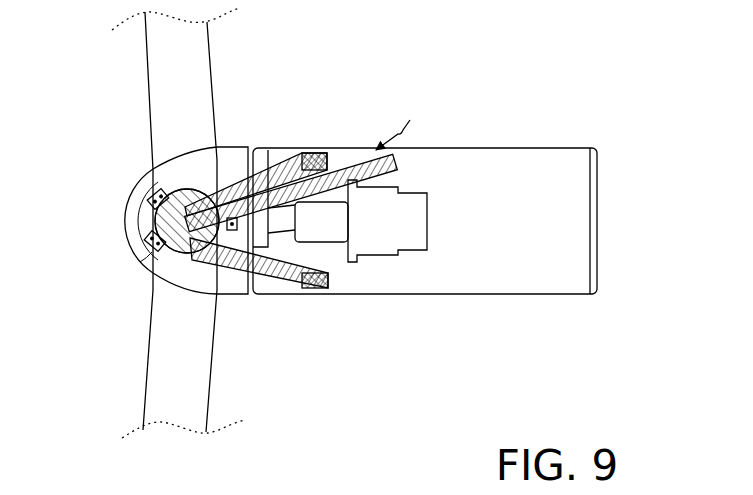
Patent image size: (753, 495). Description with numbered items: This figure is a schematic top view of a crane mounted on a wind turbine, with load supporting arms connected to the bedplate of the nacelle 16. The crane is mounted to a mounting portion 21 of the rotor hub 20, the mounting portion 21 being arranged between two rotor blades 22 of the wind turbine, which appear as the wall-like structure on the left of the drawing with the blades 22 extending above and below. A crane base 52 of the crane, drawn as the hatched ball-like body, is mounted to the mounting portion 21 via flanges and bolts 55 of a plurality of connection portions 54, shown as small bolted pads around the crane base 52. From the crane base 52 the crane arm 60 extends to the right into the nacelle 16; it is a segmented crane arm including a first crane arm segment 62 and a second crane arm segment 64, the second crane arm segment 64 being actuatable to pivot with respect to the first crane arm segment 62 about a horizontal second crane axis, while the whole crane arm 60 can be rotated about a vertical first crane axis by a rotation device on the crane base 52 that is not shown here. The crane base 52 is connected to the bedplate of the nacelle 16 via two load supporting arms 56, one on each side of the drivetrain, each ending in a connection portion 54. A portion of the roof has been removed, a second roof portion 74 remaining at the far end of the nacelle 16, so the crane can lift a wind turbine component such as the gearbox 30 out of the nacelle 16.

The nacelle 16 is at (553, 294).
The rotor hub 20 is at (228, 147).
The mounting portion 21 is at (148, 238).
The blade 22 is at (145, 61).
The gearbox 30 is at (381, 256).
The crane base 52 is at (145, 230).
The connection portion 54 is at (157, 195).
The flanges and bolts 55 is at (157, 180).
The load supporting arm 56 is at (265, 170).
The crane arm 60 is at (406, 119).
The first crane arm segment 62 is at (160, 214).
The second crane arm segment 64 is at (333, 172).
The second roof portion 74 is at (596, 170).